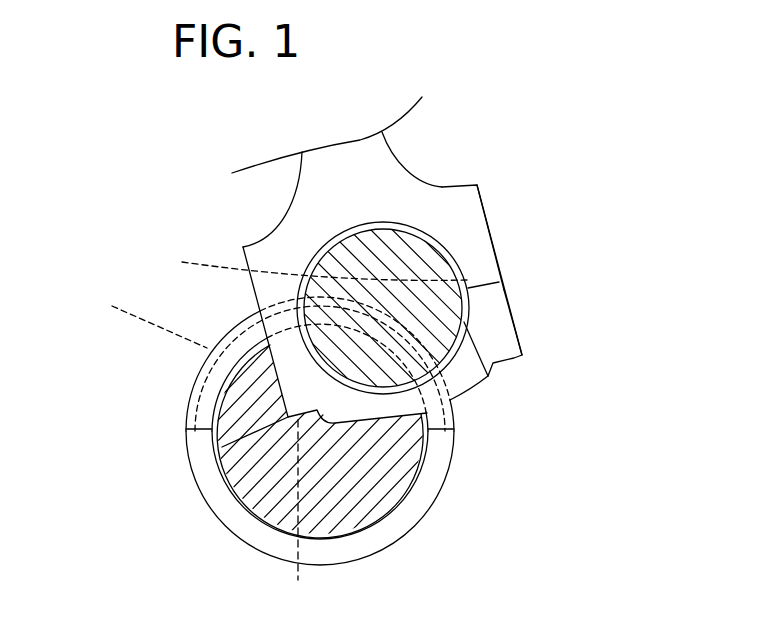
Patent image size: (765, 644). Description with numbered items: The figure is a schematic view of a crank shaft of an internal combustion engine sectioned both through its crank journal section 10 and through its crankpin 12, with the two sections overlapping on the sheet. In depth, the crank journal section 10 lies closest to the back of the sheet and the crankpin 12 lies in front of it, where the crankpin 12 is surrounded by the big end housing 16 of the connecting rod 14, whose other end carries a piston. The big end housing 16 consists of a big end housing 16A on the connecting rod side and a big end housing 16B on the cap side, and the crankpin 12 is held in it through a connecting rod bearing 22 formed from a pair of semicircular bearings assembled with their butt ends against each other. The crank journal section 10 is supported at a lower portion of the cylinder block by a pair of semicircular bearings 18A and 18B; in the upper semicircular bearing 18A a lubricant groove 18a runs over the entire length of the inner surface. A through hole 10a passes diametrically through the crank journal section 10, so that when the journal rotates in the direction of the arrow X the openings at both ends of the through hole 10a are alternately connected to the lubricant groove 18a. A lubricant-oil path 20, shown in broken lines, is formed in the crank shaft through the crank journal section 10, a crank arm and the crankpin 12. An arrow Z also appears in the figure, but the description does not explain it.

The crank journal section 10 is at (253, 508).
The through hole 10a is at (294, 519).
The crankpin 12 is at (402, 248).
The connecting rod 14 is at (300, 178).
The big end housing 16 is at (497, 185).
The big end housing of the connecting rod side 16A is at (495, 245).
The big end housing of the cap side 16B is at (516, 309).
The semicircular bearing 18A is at (190, 381).
The lubricant groove 18a is at (195, 414).
The semicircular bearing 18B is at (200, 473).
The lubricant-oil path 20 is at (271, 297).
The connecting rod bearing 22 is at (475, 325).
The direction of rotation X is at (392, 478).
The direction Z is at (490, 380).